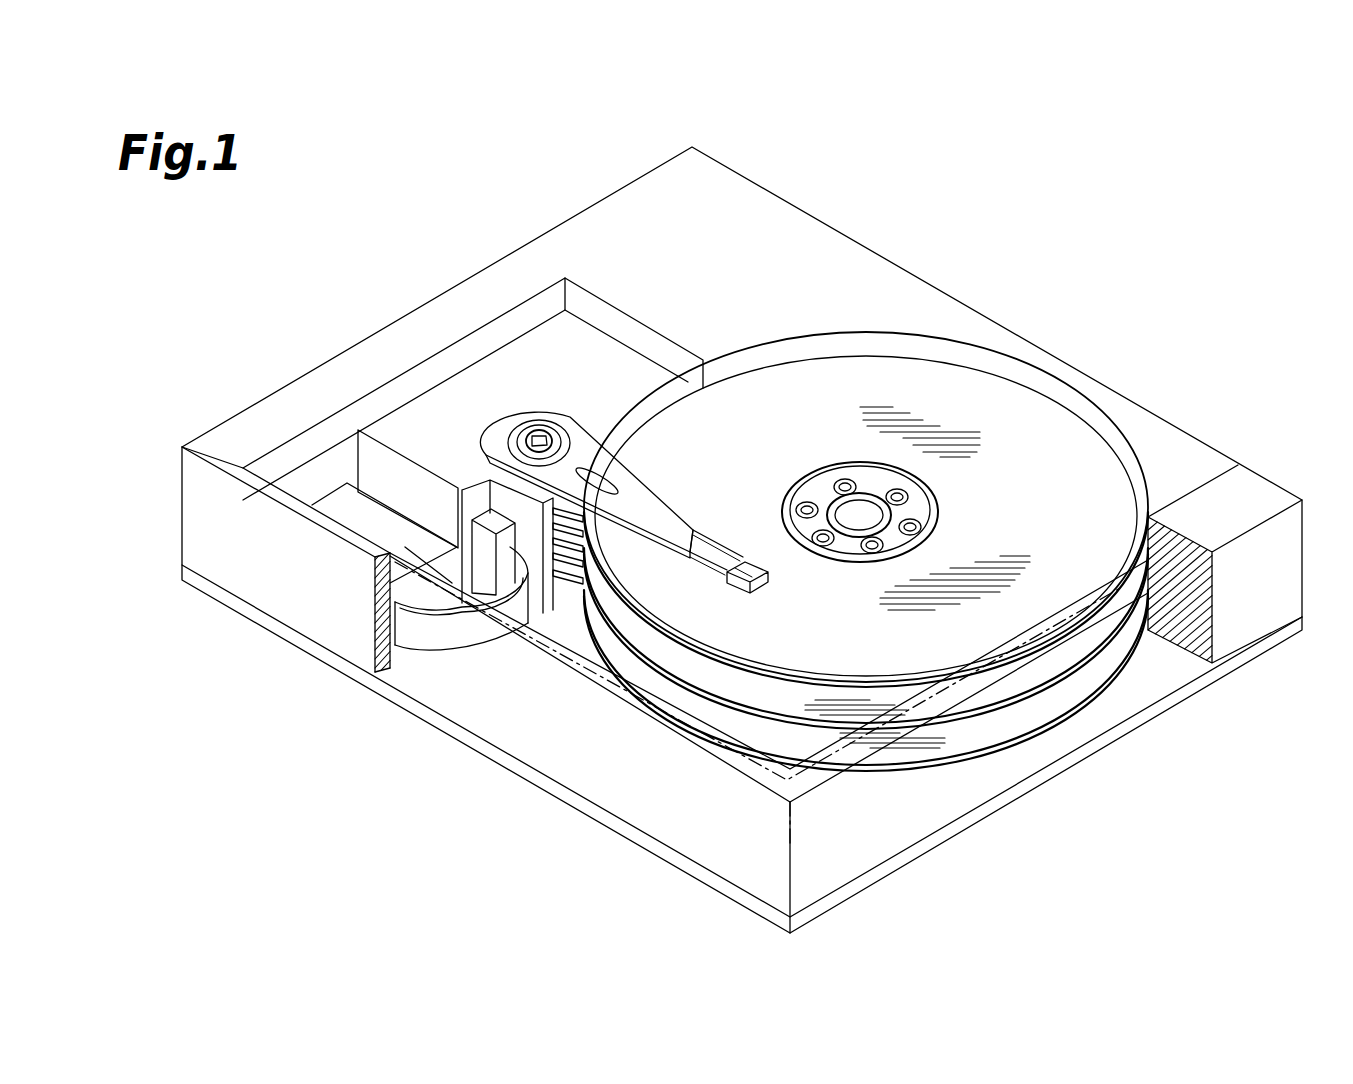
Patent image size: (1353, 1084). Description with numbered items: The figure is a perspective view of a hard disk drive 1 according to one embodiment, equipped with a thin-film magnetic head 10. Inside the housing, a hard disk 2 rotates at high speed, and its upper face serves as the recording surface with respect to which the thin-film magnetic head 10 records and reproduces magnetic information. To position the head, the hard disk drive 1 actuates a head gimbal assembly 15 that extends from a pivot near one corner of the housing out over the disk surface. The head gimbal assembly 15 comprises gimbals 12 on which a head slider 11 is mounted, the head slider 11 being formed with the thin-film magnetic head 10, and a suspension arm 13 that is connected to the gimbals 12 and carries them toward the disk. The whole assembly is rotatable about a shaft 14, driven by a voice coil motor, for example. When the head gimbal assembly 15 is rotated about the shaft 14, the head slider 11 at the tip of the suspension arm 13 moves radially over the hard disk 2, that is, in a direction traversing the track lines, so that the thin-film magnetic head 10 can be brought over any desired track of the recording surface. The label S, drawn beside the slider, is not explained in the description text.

The hard disk drive 1 is at (986, 257).
The hard disk 2 is at (1000, 418).
The thin-film magnetic head 10 is at (745, 560).
The head slider 11 is at (733, 585).
The gimbals 12 is at (703, 553).
The suspension arm 13 is at (640, 523).
The shaft 14 is at (540, 428).
The head gimbal assembly 15 is at (680, 500).
The slider S is at (760, 588).